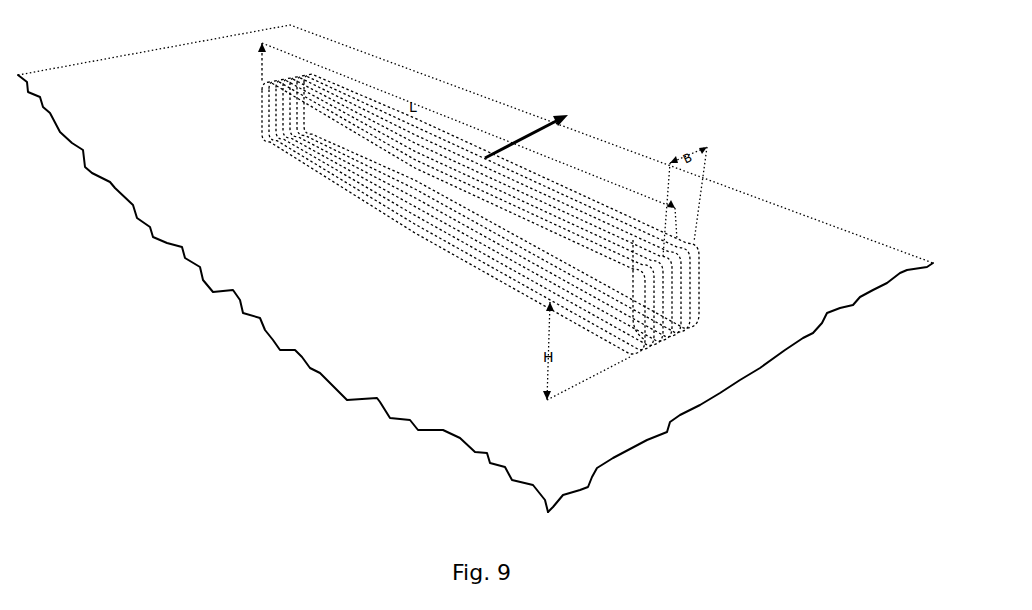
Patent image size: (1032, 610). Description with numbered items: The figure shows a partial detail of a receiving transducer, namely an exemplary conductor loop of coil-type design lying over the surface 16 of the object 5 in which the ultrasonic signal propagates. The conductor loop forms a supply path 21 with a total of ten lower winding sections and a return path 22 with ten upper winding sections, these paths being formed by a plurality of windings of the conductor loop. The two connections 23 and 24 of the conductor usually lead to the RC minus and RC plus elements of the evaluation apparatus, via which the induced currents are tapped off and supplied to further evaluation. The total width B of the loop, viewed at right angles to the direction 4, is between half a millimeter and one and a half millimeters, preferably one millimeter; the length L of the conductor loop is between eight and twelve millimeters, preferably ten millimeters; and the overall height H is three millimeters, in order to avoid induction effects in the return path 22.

The direction 4 is at (541, 118).
The object 5 is at (471, 198).
The surface of the object 16 is at (386, 334).
The supply path 21 is at (508, 268).
The return path 22 is at (552, 212).
The connection 23 is at (258, 62).
The connection 24 is at (640, 237).